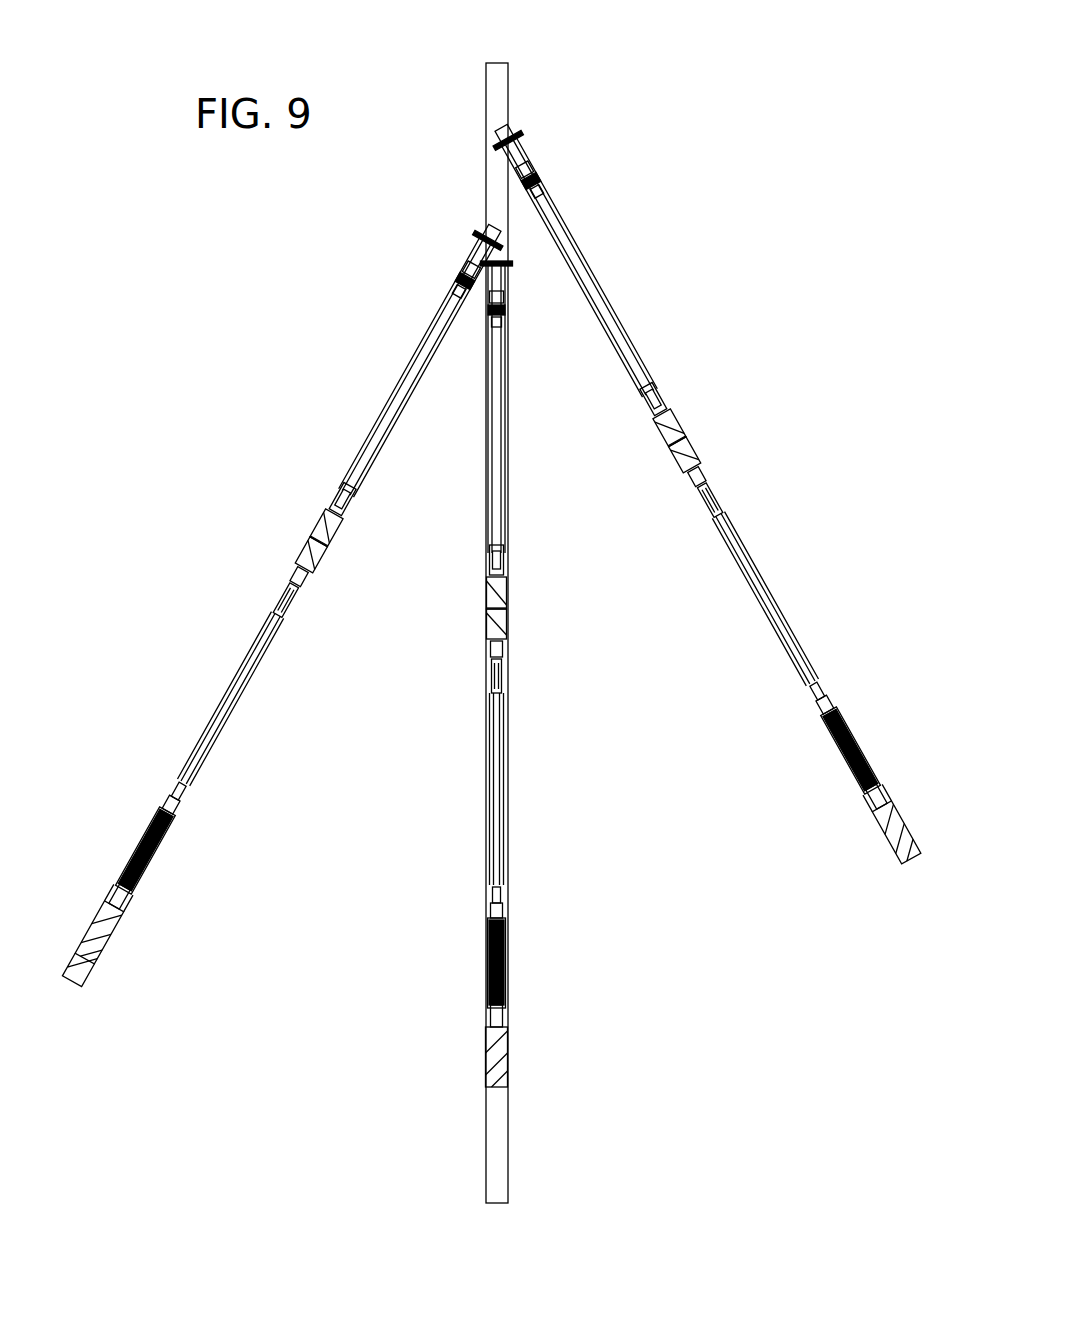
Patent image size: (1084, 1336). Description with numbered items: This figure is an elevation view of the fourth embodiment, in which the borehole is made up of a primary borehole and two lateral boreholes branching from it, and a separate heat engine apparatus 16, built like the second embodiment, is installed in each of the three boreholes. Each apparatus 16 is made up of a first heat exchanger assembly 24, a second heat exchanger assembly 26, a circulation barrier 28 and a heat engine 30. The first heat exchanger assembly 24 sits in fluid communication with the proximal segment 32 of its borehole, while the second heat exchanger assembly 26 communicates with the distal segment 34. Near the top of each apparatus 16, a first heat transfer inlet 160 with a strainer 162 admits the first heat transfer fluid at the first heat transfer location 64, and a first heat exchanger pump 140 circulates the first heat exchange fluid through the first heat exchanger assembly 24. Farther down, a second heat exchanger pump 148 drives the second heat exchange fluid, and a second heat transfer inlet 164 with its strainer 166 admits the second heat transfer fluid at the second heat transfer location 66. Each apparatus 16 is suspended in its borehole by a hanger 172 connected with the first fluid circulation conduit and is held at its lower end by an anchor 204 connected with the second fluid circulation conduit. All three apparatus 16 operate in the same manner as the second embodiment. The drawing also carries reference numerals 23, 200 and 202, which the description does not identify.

The heat engine apparatus 16 is at (345, 415).
The lower strut section 23 is at (214, 735).
The first heat exchanger assembly 24 is at (333, 536).
The second heat exchanger assembly 26 is at (308, 578).
The circulation barrier 28 is at (315, 560).
The heat engine 30 is at (323, 548).
The proximal segment 32 is at (412, 362).
The distal segment 34 is at (232, 682).
The first heat transfer location 64 is at (468, 276).
The second heat transfer location 66 is at (150, 828).
The first heat exchanger pump 140 is at (340, 490).
The second heat exchanger pump 148 is at (300, 590).
The first heat transfer inlet 160 is at (465, 285).
The strainer 162 is at (460, 292).
The second heat transfer inlet 164 is at (160, 843).
The strainer 166 is at (125, 870).
The hanger 172 is at (478, 238).
The pole 200 is at (462, 1162).
The strut foot 202 is at (120, 988).
The anchor 204 is at (100, 950).